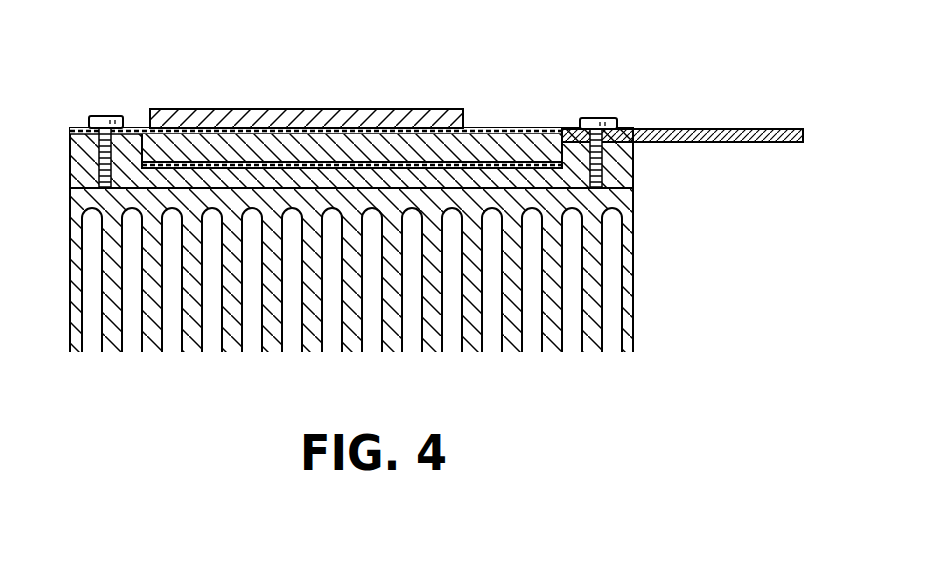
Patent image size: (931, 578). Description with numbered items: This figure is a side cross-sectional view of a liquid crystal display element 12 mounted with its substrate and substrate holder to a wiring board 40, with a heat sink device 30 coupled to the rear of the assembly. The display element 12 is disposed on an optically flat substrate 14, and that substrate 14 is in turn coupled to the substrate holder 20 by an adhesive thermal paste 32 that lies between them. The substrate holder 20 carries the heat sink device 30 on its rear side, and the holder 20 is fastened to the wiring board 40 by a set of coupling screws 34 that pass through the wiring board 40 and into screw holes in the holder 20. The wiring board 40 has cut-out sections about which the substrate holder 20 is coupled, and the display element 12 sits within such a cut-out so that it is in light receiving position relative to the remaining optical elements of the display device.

The liquid crystal display element 12 is at (353, 110).
The optically flat substrate 14 is at (522, 148).
The substrate holder 20 is at (635, 172).
The heat sink device 30 is at (633, 282).
The adhesive thermal paste 32 is at (505, 155).
The coupling screws 34 is at (103, 115).
The wiring board 40 is at (763, 129).